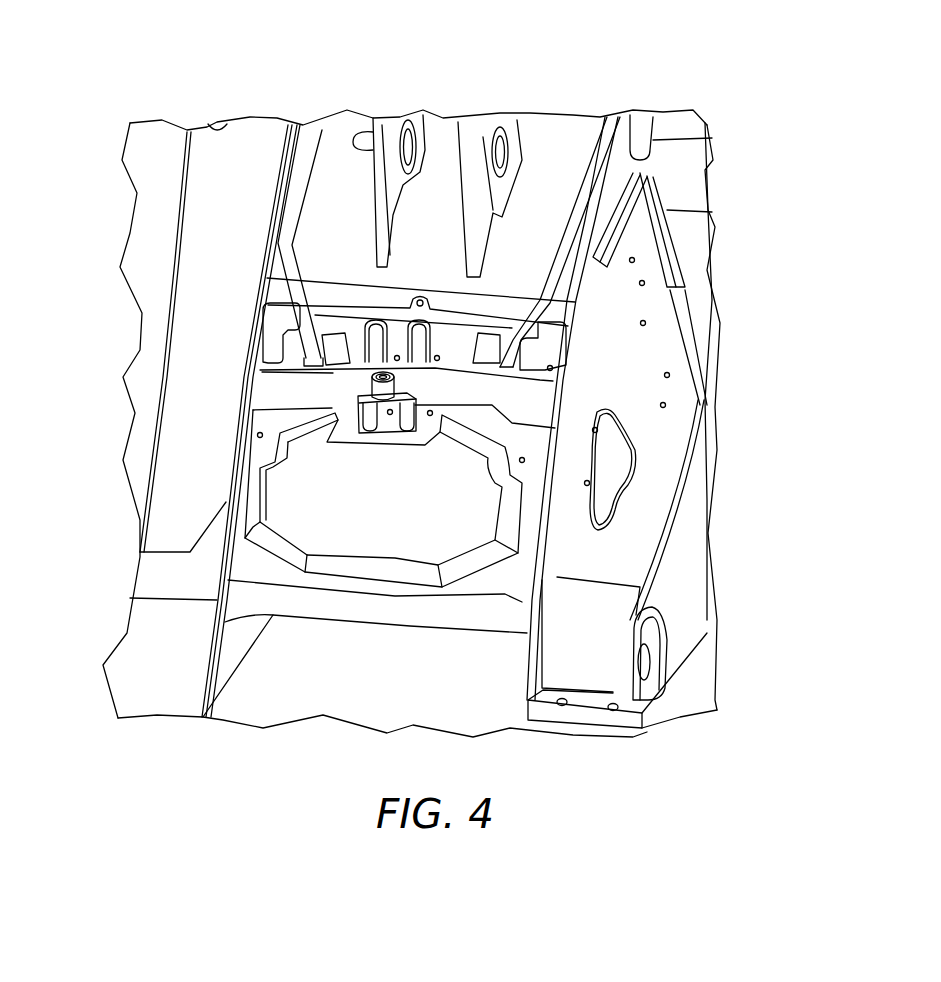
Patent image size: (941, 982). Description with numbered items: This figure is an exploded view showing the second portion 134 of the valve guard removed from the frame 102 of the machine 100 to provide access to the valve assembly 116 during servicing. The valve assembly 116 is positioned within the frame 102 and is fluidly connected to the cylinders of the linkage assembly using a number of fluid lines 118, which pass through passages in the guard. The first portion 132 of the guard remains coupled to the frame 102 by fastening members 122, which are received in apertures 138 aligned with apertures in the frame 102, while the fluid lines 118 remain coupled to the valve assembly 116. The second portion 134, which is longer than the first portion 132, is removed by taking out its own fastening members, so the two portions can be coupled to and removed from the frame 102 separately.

The machine 100 is at (825, 157).
The frame 102 is at (675, 392).
The valve assembly 116 is at (359, 384).
The fluid lines 118 is at (317, 142).
The fastening members 122 is at (277, 345).
The first portion 132 is at (278, 318).
The second portion 134 is at (322, 502).
The apertures 138 is at (260, 579).